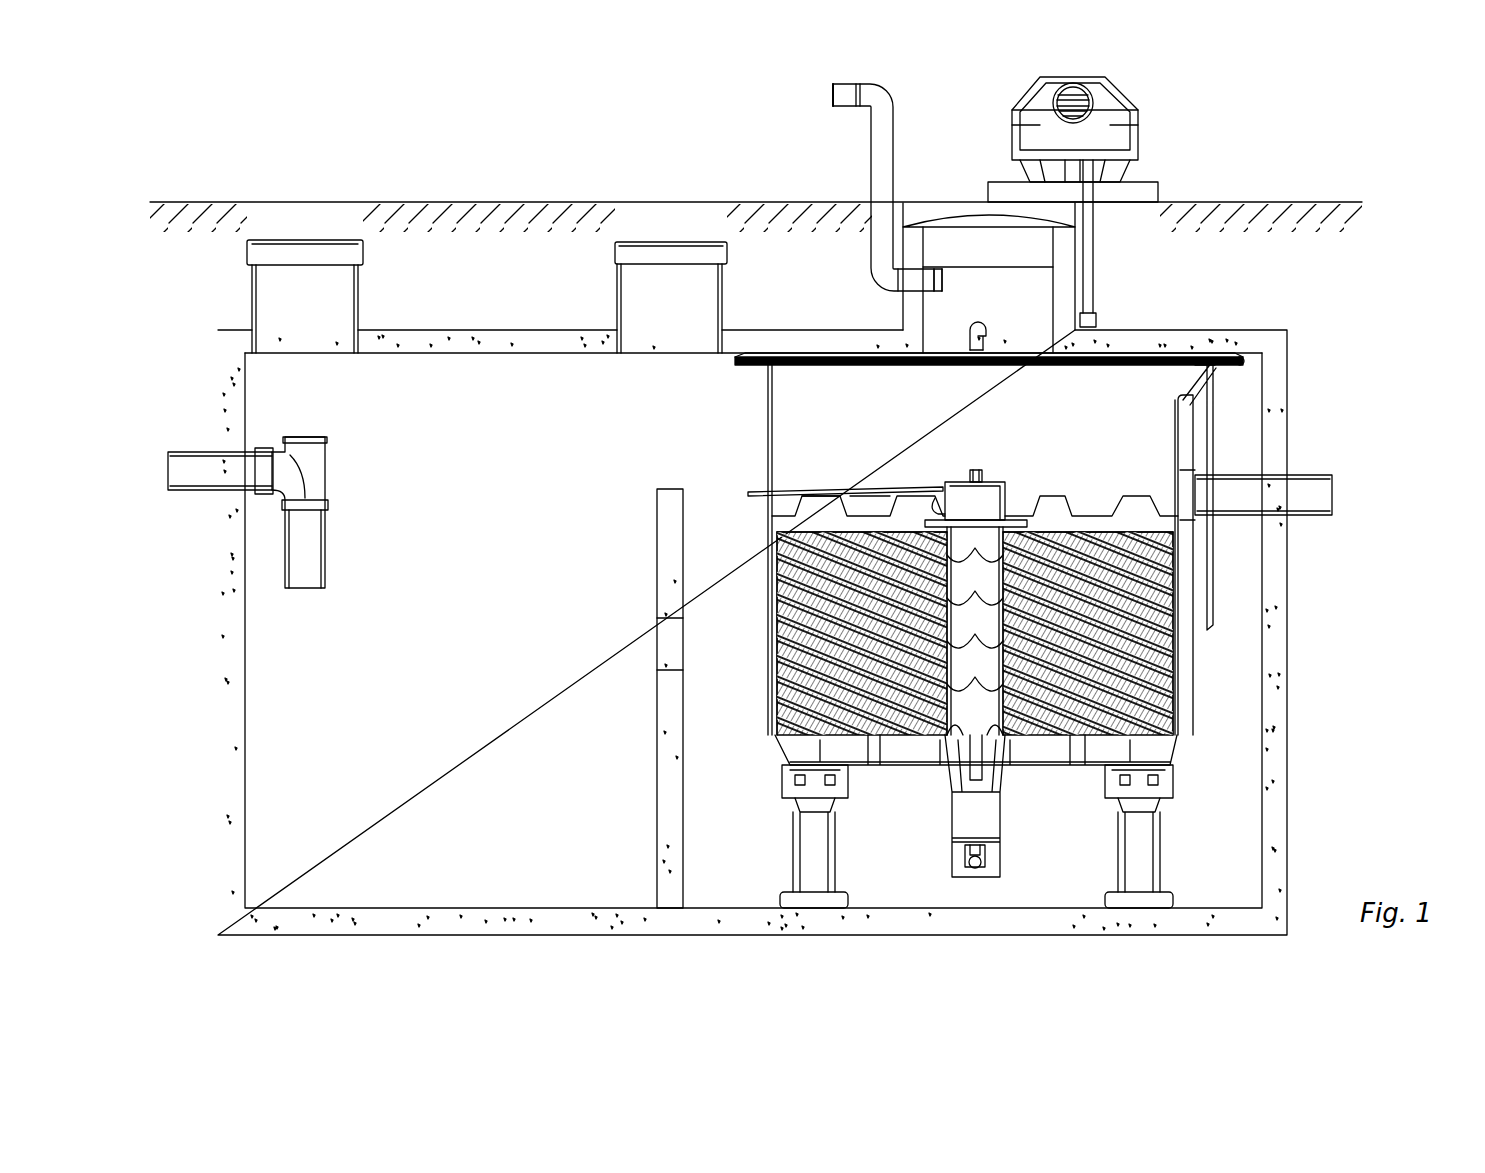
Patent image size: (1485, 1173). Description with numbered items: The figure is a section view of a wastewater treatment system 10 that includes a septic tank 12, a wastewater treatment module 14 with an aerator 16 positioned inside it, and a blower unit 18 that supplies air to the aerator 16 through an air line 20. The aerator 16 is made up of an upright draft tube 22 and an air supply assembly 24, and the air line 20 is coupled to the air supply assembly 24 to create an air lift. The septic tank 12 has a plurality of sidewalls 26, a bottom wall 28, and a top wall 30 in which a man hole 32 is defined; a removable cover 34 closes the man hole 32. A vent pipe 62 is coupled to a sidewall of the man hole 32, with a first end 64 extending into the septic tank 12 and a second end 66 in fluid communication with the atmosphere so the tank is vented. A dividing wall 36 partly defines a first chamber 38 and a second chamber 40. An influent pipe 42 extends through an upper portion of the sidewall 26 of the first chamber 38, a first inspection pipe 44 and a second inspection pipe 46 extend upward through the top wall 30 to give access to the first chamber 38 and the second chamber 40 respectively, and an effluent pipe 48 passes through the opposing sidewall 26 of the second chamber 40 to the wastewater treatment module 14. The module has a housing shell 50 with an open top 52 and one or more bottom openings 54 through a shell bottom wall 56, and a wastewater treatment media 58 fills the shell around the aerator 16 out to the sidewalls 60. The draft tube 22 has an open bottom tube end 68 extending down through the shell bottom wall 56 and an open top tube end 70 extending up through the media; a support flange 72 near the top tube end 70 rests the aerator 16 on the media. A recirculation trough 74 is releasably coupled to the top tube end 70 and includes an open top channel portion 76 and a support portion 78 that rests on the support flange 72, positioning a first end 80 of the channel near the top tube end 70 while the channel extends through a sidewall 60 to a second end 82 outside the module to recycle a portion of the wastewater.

The wastewater treatment system 10 is at (1318, 123).
The septic tank 12 is at (1275, 330).
The wastewater treatment module 14 is at (1217, 408).
The aerator 16 is at (943, 857).
The blower unit 18 is at (1140, 92).
The air line 20 is at (1094, 268).
The draft tube 22 is at (1000, 858).
The air supply assembly 24 is at (982, 882).
The sidewalls 26 is at (228, 626).
The bottom wall 28 is at (447, 925).
The top wall 30 is at (530, 330).
The man hole 32 is at (925, 243).
The removable cover 34 is at (930, 220).
The dividing wall 36 is at (655, 770).
The first chamber 38 is at (300, 818).
The second chamber 40 is at (735, 880).
The influent pipe 42 is at (190, 450).
The first inspection pipe 44 is at (303, 238).
The second inspection pipe 46 is at (688, 240).
The effluent pipe 48 is at (1320, 472).
The housing shell 50 is at (767, 418).
The open top 52 is at (1122, 333).
The bottom openings 54 is at (902, 748).
The shell bottom wall 56 is at (920, 763).
The wastewater treatment media 58 is at (1153, 658).
The sidewalls 60 is at (777, 532).
The vent pipe 62 is at (887, 86).
The first end 64 is at (945, 268).
The second end 66 is at (833, 107).
The bottom tube end 68 is at (957, 890).
The top tube end 70 is at (998, 470).
The support flange 72 is at (1035, 515).
The recirculation trough 74 is at (833, 488).
The open top channel portion 76 is at (877, 490).
The support portion 78 is at (935, 510).
The first end 80 is at (950, 470).
The second end 82 is at (740, 485).